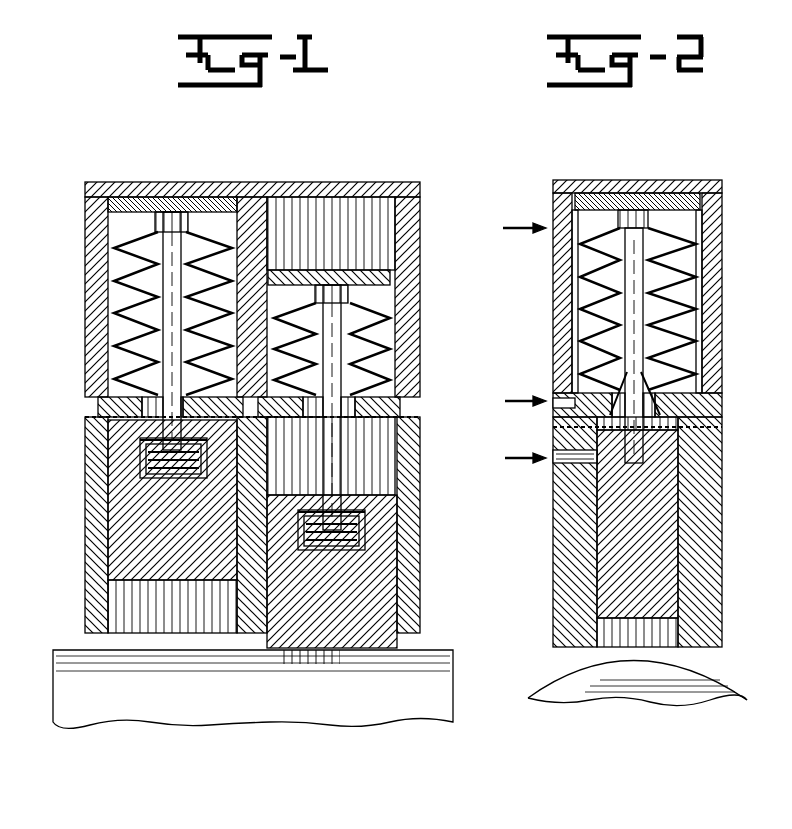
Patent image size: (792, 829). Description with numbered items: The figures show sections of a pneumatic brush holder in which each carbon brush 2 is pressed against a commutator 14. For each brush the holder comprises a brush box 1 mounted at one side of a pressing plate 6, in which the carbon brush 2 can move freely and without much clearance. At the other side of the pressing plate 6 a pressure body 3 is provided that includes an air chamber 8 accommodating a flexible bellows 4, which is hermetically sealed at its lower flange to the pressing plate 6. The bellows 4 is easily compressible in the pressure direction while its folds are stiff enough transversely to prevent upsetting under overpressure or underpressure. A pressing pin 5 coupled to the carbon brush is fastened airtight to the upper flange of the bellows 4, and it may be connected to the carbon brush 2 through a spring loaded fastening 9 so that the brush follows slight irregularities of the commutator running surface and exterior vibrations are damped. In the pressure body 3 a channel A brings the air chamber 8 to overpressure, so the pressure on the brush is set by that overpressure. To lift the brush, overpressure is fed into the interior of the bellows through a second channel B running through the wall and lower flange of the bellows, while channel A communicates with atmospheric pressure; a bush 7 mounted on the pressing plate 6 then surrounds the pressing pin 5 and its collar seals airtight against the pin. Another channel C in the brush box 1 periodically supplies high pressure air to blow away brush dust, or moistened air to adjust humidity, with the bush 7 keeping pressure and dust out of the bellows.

In FIG. 1, the brush box 1 is at (420, 583).
In FIG. 2, the brush box 1 is at (553, 572).
In FIG. 1, the carbon brush 2 is at (420, 500).
In FIG. 2, the carbon brush 2 is at (553, 498).
In FIG. 1, the pressure body 3 is at (420, 190).
In FIG. 2, the pressure body 3 is at (553, 185).
In FIG. 1, the flexible bellows 4 is at (387, 310).
In FIG. 2, the flexible bellows 4 is at (553, 300).
In FIG. 1, the pressing pin 5 is at (338, 362).
In FIG. 2, the pressing pin 5 is at (553, 360).
In FIG. 1, the pressing plate 6 is at (420, 415).
In FIG. 2, the pressing plate 6 is at (553, 428).
In FIG. 2, the bush 7 is at (722, 406).
In FIG. 1, the air chamber 8 is at (415, 250).
In FIG. 2, the air chamber 8 is at (553, 255).
In FIG. 1, the spring loaded fastening 9 is at (150, 458).
In FIG. 1, the commutator 14 is at (440, 681).
In FIG. 2, the commutator 14 is at (548, 690).
In FIG. 2, the channel A is at (515, 227).
In FIG. 2, the channel B is at (515, 401).
In FIG. 2, the channel C is at (515, 457).